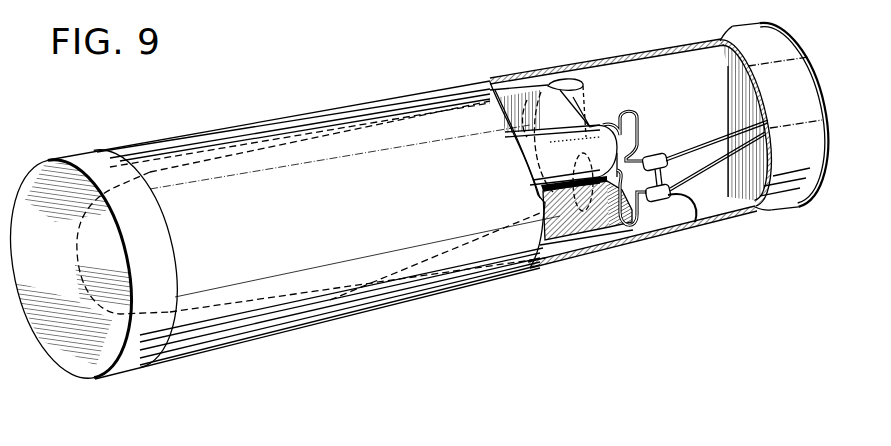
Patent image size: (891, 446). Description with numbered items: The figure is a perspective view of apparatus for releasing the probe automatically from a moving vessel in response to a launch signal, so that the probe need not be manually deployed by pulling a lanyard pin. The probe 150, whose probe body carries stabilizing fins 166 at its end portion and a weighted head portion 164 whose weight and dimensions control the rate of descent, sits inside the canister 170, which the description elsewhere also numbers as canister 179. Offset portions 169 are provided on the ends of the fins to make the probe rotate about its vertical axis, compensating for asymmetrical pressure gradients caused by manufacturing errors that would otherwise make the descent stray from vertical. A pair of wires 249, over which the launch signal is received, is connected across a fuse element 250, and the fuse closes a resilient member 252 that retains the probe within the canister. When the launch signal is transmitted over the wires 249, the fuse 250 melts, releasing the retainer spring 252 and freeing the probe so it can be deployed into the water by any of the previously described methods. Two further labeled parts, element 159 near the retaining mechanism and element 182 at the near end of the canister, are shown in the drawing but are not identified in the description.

The probe 150 is at (76, 247).
The block 159 is at (587, 235).
The weighted head portion 164 is at (190, 340).
The stabilizing fins 166 is at (524, 97).
The offset portions 169 is at (587, 80).
The canister 170 is at (305, 290).
The canister 179 is at (800, 64).
The end cap 182 is at (76, 362).
The pair of wires 249 is at (673, 160).
The fuse element 250 is at (696, 222).
The resilient member 252 is at (638, 118).